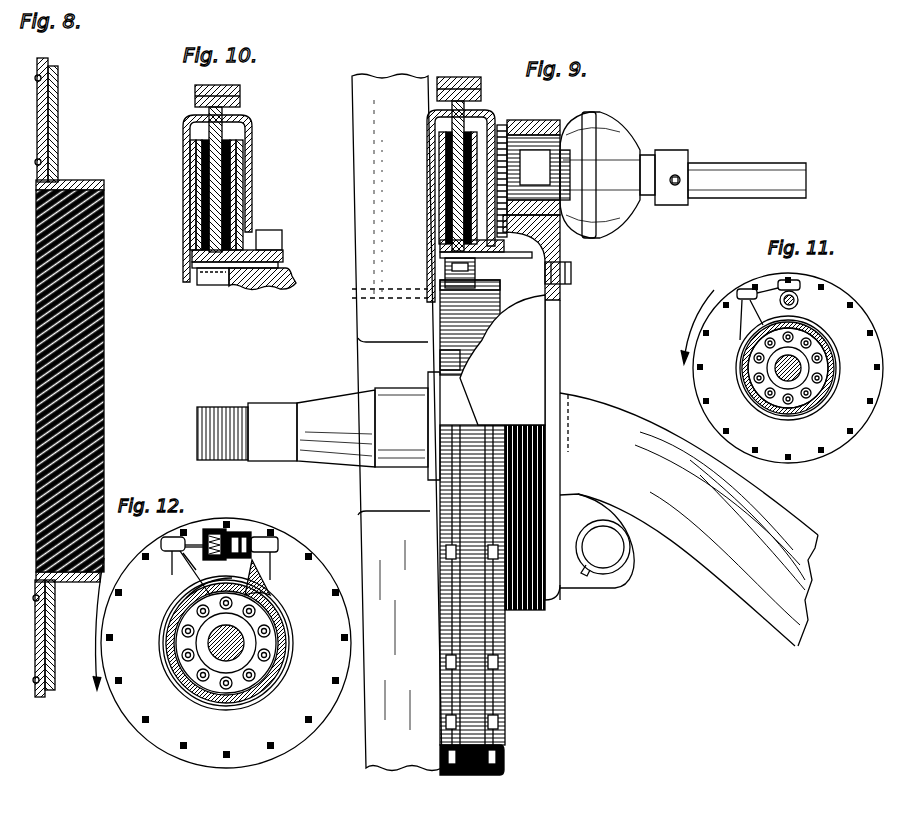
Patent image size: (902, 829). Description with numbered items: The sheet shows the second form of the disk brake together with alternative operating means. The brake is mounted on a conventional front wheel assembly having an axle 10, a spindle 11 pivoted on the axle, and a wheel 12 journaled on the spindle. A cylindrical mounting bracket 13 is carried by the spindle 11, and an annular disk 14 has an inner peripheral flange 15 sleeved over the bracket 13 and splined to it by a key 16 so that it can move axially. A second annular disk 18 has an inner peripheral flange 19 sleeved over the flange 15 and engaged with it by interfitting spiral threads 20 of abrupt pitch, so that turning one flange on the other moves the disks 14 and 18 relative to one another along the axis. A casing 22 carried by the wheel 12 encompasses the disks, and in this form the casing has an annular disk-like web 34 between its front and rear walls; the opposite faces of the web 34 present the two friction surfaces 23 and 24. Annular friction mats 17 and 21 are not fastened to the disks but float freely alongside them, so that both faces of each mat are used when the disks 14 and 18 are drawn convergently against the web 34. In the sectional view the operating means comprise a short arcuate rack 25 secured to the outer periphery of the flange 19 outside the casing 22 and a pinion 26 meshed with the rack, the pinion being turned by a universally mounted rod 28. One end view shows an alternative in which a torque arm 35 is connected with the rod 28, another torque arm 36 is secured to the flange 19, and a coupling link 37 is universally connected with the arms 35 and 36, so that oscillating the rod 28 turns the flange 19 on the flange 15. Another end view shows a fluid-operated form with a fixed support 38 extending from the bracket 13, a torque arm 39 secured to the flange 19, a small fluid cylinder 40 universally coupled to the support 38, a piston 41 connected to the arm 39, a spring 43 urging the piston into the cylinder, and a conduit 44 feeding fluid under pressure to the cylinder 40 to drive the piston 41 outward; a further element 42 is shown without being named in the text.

In FIG. 9, the axle 10 is at (808, 563).
In FIG. 9, the spindle 11 is at (535, 378).
In FIG. 11, the spindle 11 is at (800, 368).
In FIG. 12, the spindle 11 is at (244, 644).
In FIG. 9, the wheel 12 is at (352, 192).
In FIG. 10, the cylindrical mounting bracket 13 is at (286, 271).
In FIG. 9, the cylindrical mounting bracket 13 is at (566, 271).
In FIG. 11, the cylindrical mounting bracket 13 is at (742, 397).
In FIG. 12, the cylindrical mounting bracket 13 is at (285, 622).
In FIG. 10, the annular disk 14 is at (193, 205).
In FIG. 9, the annular disk 14 is at (447, 173).
In FIG. 10, the inner peripheral flange 15 is at (195, 262).
In FIG. 9, the inner peripheral flange 15 is at (442, 256).
In FIG. 11, the inner peripheral flange 15 is at (745, 378).
In FIG. 12, the inner peripheral flange 15 is at (168, 655).
In FIG. 10, the key 16 is at (225, 274).
In FIG. 9, the key 16 is at (445, 278).
In FIG. 10, the annular friction mat 17 is at (206, 186).
In FIG. 9, the annular friction mat 17 is at (466, 192).
In FIG. 8, the annular disk 18 is at (37, 124).
In FIG. 10, the annular disk 18 is at (241, 201).
In FIG. 9, the annular disk 18 is at (533, 167).
In FIG. 8, the inner peripheral flange 19 is at (75, 180).
In FIG. 10, the inner peripheral flange 19 is at (282, 250).
In FIG. 9, the inner peripheral flange 19 is at (442, 246).
In FIG. 11, the inner peripheral flange 19 is at (748, 354).
In FIG. 12, the inner peripheral flange 19 is at (168, 630).
In FIG. 8, the spiral threads 20 is at (100, 180).
In FIG. 9, the spiral threads 20 is at (548, 249).
In FIG. 11, the spiral threads 20 is at (760, 404).
In FIG. 12, the spiral threads 20 is at (175, 682).
In FIG. 8, the annular friction mat 21 is at (58, 136).
In FIG. 10, the annular friction mat 21 is at (235, 184).
In FIG. 9, the annular friction mat 21 is at (473, 215).
In FIG. 10, the casing 22 is at (186, 124).
In FIG. 9, the casing 22 is at (430, 118).
In FIG. 11, the casing 22 is at (845, 296).
In FIG. 12, the casing 22 is at (308, 555).
In FIG. 10, the annular friction surface 23 is at (205, 158).
In FIG. 9, the annular friction surface 23 is at (442, 146).
In FIG. 10, the annular friction surface 24 is at (229, 154).
In FIG. 9, the annular friction surface 24 is at (515, 145).
In FIG. 10, the arcuate rack 25 is at (276, 236).
In FIG. 9, the arcuate rack 25 is at (560, 205).
In FIG. 9, the pinion 26 is at (567, 136).
In FIG. 9, the operating rod 28 is at (762, 166).
In FIG. 11, the operating rod 28 is at (797, 306).
In FIG. 10, the annular disk-like web 34 is at (222, 140).
In FIG. 9, the annular disk-like web 34 is at (470, 140).
In FIG. 11, the torque arm 35 is at (800, 294).
In FIG. 11, the torque arm 36 is at (745, 318).
In FIG. 11, the coupling link 37 is at (770, 280).
In FIG. 12, the fixed support 38 is at (262, 573).
In FIG. 12, the torque arm 39 is at (172, 578).
In FIG. 12, the fluid cylinder 40 is at (238, 532).
In FIG. 12, the piston 41 is at (215, 529).
In FIG. 12, the cylinder 42 is at (170, 537).
In FIG. 12, the spring 43 is at (186, 598).
In FIG. 12, the conduit 44 is at (262, 537).